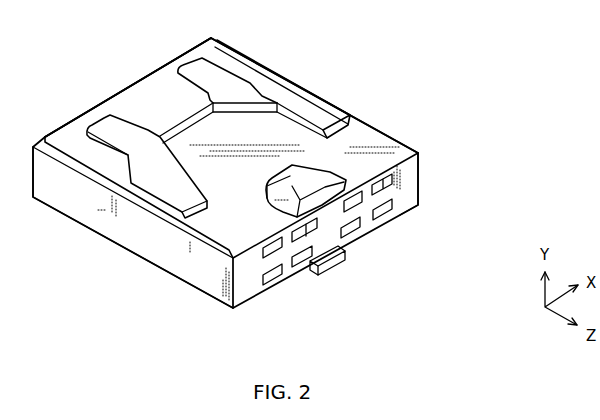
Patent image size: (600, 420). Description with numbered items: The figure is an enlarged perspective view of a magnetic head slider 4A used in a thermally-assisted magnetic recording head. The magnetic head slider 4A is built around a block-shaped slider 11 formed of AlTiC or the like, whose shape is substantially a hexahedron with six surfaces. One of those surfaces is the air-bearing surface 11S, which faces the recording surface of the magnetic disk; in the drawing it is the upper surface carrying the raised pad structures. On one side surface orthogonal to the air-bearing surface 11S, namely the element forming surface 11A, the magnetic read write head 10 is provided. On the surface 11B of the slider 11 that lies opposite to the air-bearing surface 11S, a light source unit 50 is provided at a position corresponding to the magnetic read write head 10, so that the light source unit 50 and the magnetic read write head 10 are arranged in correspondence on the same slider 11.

The magnetic head slider 4A is at (430, 103).
The magnetic read write head 10 is at (370, 242).
The slider 11 is at (407, 177).
The element forming surface 11A is at (250, 262).
The surface opposite to the ABS 11B is at (412, 210).
The air-bearing surface 11S is at (165, 185).
The light source unit 50 is at (326, 266).